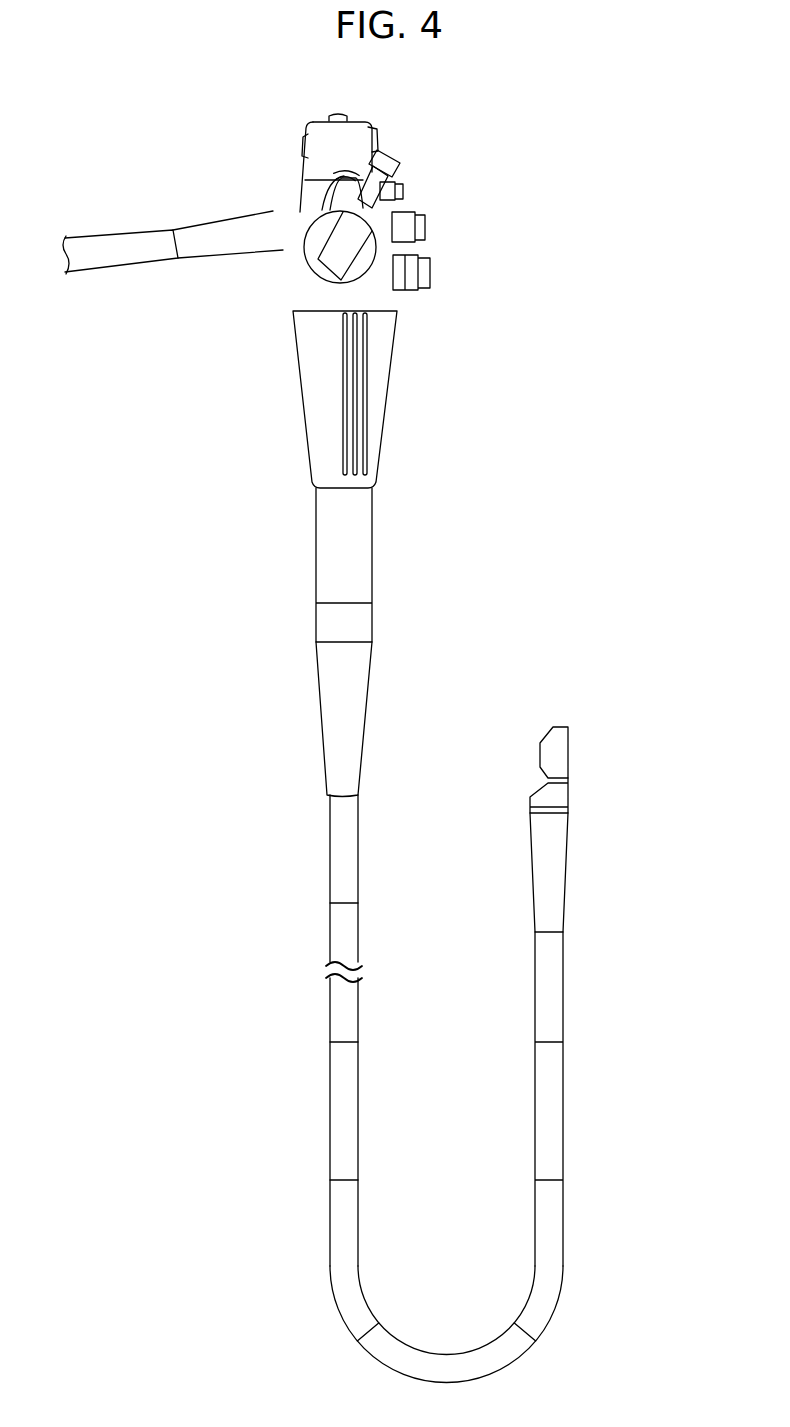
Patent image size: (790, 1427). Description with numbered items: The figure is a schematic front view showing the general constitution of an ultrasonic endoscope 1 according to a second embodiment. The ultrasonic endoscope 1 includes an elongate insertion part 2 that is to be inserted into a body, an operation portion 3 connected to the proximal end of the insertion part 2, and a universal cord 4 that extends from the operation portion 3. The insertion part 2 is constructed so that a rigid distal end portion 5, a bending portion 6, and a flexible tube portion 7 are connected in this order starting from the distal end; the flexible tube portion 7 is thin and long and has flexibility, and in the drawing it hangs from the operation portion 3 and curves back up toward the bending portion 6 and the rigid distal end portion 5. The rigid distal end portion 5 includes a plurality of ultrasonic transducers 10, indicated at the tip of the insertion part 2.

The ultrasonic endoscope 1 is at (421, 145).
The insertion part 2 is at (597, 1097).
The operation portion 3 is at (292, 383).
The universal cord 4 is at (203, 222).
The rigid distal end portion 5 is at (570, 757).
The bending portion 6 is at (532, 868).
The flexible tube portion 7 is at (450, 1352).
The ultrasonic transducers 10 is at (545, 738).